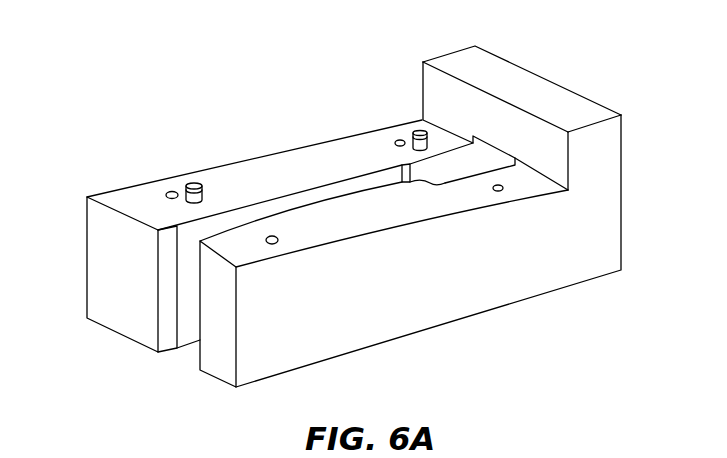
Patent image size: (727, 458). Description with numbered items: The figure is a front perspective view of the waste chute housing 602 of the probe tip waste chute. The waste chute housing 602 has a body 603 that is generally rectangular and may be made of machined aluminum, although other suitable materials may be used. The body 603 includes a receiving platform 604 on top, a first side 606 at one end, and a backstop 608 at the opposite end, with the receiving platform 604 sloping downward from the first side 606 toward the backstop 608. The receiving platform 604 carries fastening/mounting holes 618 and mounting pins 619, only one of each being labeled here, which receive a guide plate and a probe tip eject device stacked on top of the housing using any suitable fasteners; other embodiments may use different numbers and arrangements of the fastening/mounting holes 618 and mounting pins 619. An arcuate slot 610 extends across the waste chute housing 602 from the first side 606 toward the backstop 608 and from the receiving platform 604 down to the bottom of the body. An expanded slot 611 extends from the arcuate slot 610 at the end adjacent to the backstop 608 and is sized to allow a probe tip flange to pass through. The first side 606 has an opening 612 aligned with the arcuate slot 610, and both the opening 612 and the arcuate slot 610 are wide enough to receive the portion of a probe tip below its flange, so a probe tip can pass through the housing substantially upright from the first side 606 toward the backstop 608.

The waste chute housing 602 is at (142, 82).
The body 603 is at (605, 105).
The receiving platform 604 is at (283, 167).
The first side 606 is at (98, 268).
The backstop 608 is at (487, 67).
The arcuate slot 610 is at (303, 190).
The expanded slot 611 is at (442, 188).
The opening 612 is at (178, 363).
The fastening/mounting holes 618 is at (171, 190).
The mounting pins 619 is at (193, 182).